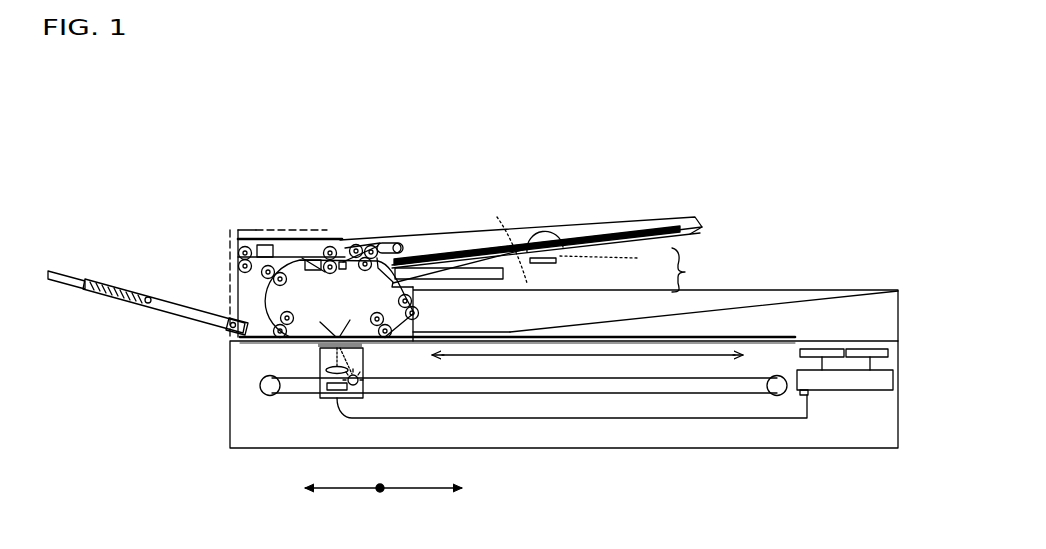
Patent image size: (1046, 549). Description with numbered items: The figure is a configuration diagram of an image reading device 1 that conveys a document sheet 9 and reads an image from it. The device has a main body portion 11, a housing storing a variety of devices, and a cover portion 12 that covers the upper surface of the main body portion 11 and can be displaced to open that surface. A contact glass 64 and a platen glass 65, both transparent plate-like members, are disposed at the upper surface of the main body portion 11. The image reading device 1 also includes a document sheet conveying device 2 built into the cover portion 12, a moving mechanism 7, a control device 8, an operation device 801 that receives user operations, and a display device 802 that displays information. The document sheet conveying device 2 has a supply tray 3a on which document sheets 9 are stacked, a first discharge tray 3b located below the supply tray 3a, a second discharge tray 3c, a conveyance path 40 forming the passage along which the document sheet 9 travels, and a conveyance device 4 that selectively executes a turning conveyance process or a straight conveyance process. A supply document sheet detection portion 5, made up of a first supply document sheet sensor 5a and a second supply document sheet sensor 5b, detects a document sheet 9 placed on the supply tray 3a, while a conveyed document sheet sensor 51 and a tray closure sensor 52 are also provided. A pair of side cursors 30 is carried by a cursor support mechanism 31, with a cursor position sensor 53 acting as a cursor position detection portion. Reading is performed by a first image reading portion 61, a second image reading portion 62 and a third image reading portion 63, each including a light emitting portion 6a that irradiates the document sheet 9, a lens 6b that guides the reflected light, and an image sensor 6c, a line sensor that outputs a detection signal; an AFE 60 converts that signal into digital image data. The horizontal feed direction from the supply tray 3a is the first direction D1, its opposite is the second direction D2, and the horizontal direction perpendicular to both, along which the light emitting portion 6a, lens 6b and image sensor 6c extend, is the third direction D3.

The image reading device 1 is at (798, 176).
The document sheet conveying device 2 is at (450, 220).
The supply tray 3a is at (694, 236).
The first discharge tray 3b is at (747, 303).
The second discharge tray 3c is at (150, 305).
The conveyance device 4 is at (334, 240).
The supply document sheet detection portion 5 is at (686, 270).
The first supply document sheet sensor 5a is at (527, 283).
The second supply document sheet sensor 5b is at (613, 258).
The light emitting portion 6a is at (365, 377).
The lens 6b is at (333, 371).
The image sensor 6c is at (333, 391).
The moving mechanism 7 is at (256, 383).
The control device 8 is at (895, 380).
The document sheet 9 is at (597, 238).
The main body portion 11 is at (228, 443).
The cover portion 12 is at (905, 312).
The side cursors 30 is at (543, 234).
The cursor support mechanism 31 is at (502, 234).
The conveyance path 40 is at (287, 250).
The conveyed document sheet sensor 51 is at (343, 280).
The tray closure sensor 52 is at (235, 228).
The cursor position sensor 53 is at (543, 264).
The AFE (Analog Front End) 60 is at (810, 397).
The first image reading portion 61 is at (366, 408).
The second image reading portion 62 is at (298, 257).
The third image reading portion 63 is at (265, 245).
The contact glass 64 is at (362, 348).
The platen glass 65 is at (768, 337).
The operation device 801 is at (830, 346).
The display device 802 is at (897, 355).
The first direction D1 is at (320, 491).
The second direction D2 is at (443, 491).
The third direction D3 is at (383, 492).